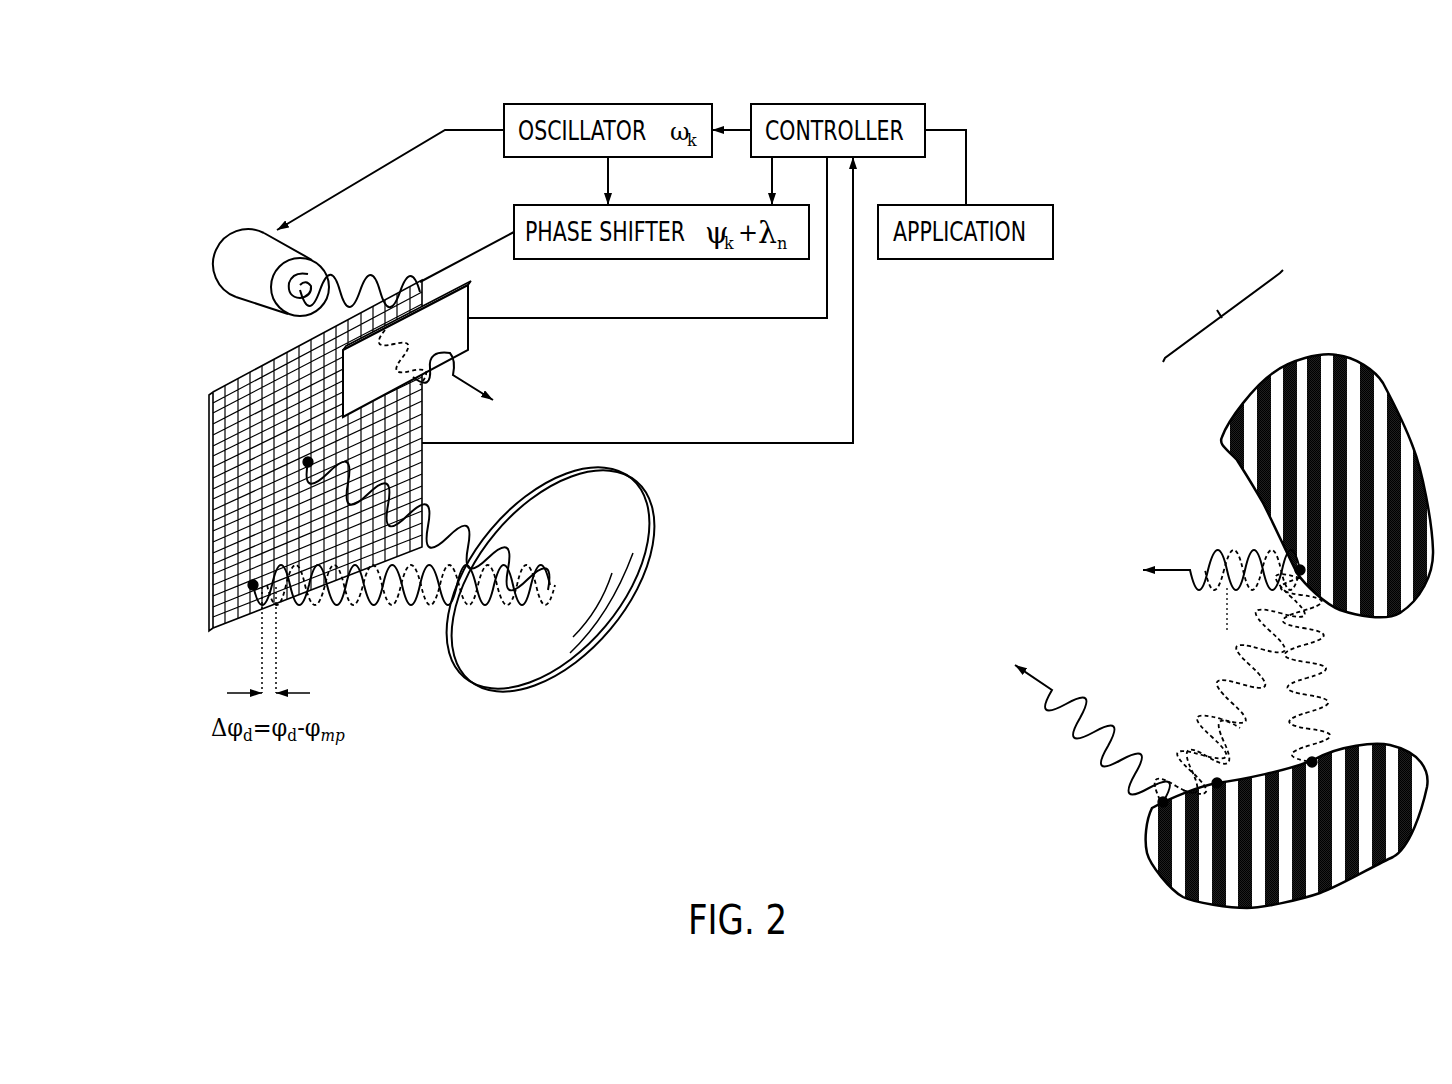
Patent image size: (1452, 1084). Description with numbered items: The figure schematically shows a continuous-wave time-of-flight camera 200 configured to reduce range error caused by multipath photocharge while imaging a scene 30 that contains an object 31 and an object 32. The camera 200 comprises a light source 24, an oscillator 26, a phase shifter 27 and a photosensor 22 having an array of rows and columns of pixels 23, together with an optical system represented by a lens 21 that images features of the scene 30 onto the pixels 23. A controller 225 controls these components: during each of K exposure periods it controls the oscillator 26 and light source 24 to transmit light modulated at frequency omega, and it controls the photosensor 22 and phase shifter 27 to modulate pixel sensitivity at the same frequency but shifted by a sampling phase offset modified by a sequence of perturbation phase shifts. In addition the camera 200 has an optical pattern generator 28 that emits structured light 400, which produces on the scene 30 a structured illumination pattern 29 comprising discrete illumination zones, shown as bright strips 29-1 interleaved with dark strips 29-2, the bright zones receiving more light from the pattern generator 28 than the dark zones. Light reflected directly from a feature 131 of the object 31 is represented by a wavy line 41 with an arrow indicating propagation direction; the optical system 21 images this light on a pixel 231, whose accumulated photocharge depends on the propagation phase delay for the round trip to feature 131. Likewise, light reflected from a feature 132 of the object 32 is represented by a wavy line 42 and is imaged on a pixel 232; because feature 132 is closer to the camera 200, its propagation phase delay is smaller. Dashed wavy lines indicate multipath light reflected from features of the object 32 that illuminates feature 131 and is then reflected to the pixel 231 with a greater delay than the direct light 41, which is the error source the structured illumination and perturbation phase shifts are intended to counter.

The CW-TOF camera 200 is at (152, 197).
The photosensor 22 is at (155, 528).
The light source 24 is at (245, 228).
The oscillator 26 is at (604, 104).
The controller 225 is at (811, 104).
The phase shifter 27 is at (512, 207).
The pixels 23 is at (222, 460).
The optical pattern generator 28 is at (468, 295).
The structured light 400 is at (458, 377).
The pixel 232 is at (305, 463).
The pixel 231 is at (250, 588).
The lens 21 is at (547, 683).
The reflected light 41 is at (373, 607).
The reflected light 42 is at (453, 517).
The structured illumination pattern 29 is at (1214, 303).
The bright strips 29-1 is at (1248, 403).
The dark strips 29-2 is at (1287, 373).
The scene 30 is at (1373, 328).
The object 31 is at (1357, 487).
The feature 131 is at (1308, 570).
The object 32 is at (1307, 852).
The feature 132 is at (1217, 788).